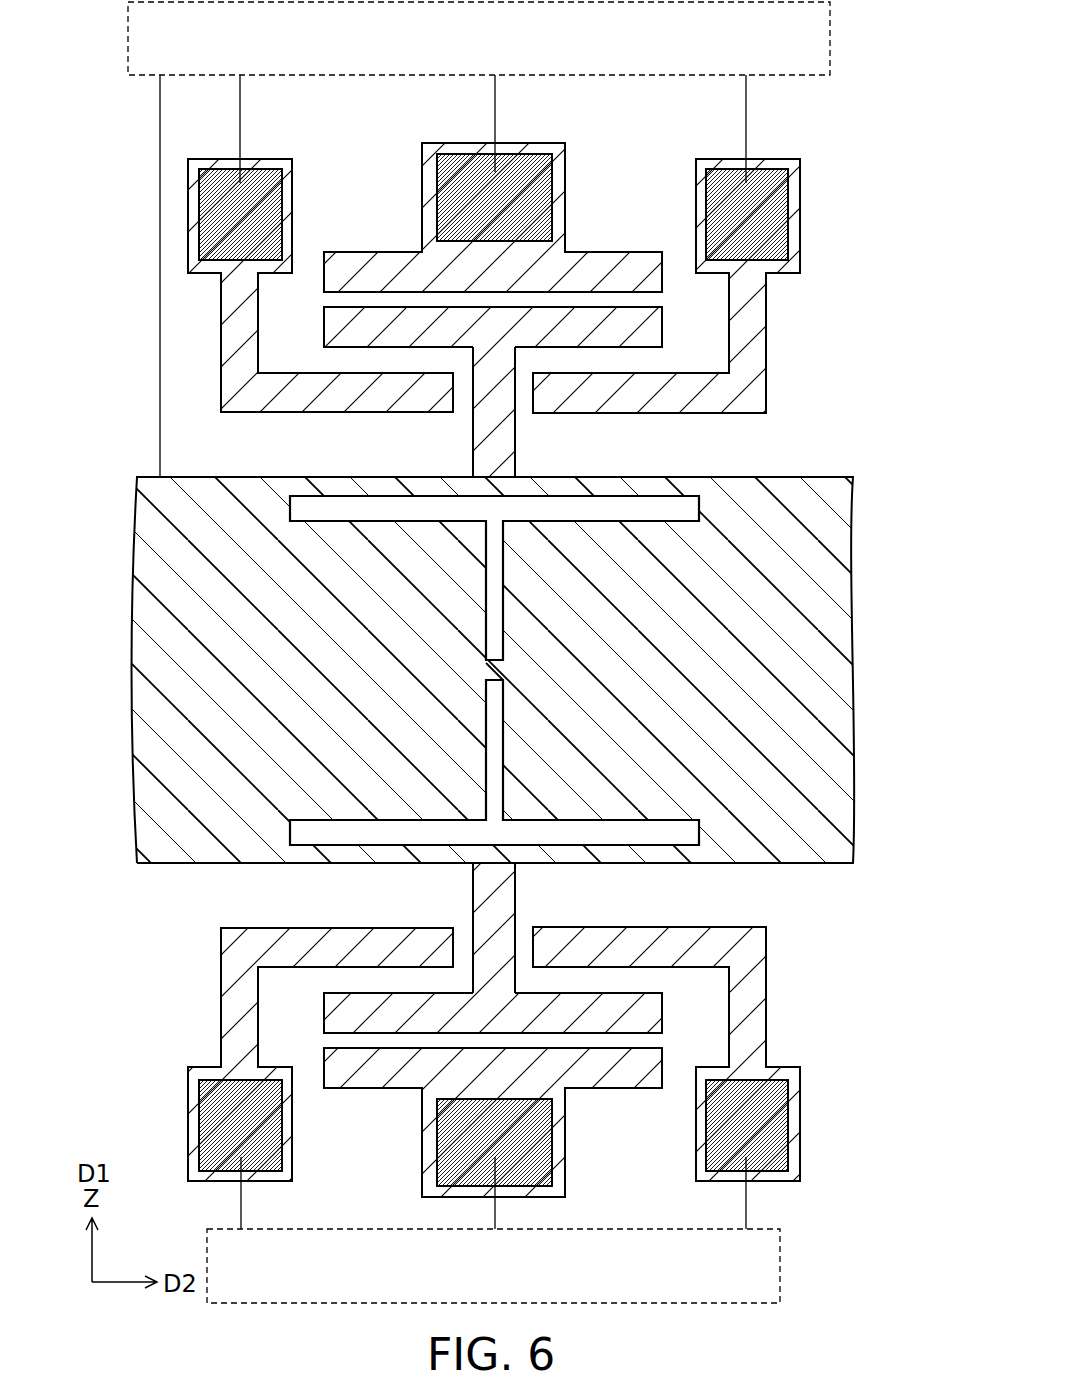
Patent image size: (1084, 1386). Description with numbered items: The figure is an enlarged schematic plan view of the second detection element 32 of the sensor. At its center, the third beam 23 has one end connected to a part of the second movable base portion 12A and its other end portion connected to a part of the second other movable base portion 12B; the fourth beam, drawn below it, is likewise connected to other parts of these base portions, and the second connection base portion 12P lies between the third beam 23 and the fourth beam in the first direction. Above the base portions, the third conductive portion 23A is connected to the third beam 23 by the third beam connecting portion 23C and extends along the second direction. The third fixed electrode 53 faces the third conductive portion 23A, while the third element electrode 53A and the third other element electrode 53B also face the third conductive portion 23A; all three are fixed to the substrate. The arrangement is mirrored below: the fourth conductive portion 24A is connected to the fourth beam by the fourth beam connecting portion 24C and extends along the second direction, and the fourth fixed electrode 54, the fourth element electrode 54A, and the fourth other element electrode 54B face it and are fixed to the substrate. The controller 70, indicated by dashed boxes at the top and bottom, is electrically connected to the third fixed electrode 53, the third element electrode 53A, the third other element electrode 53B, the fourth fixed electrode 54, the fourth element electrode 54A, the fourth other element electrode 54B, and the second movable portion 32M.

The controller 70 is at (832, 31).
The second detection element 32 is at (885, 166).
The second movable portion 32M is at (842, 246).
The third fixed electrode 53 is at (593, 272).
The third element electrode 53A is at (323, 393).
The third other element electrode 53B is at (657, 398).
The third conductive portion 23A is at (655, 326).
The third beam connecting portion 23C is at (488, 412).
The third beam 23 is at (523, 488).
The second movable base portion 12A is at (153, 493).
The second other movable base portion 12B is at (797, 502).
The second connection base portion 12P is at (498, 680).
The fourth fixed electrode 54 is at (578, 1063).
The fourth element electrode 54A is at (307, 943).
The fourth other element electrode 54B is at (655, 938).
The fourth conductive portion 24A is at (622, 1012).
The fourth beam connecting portion 24C is at (488, 918).